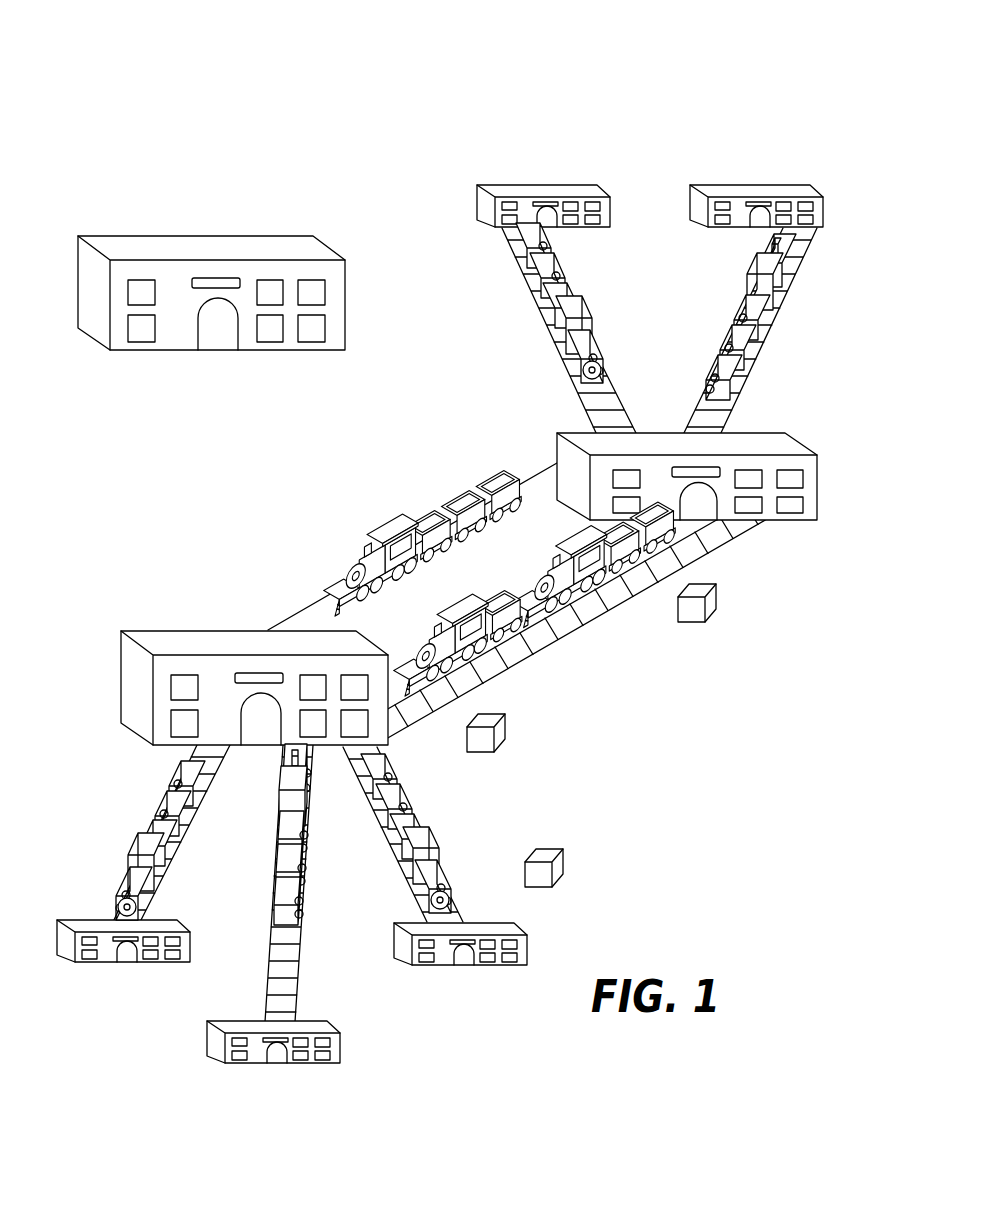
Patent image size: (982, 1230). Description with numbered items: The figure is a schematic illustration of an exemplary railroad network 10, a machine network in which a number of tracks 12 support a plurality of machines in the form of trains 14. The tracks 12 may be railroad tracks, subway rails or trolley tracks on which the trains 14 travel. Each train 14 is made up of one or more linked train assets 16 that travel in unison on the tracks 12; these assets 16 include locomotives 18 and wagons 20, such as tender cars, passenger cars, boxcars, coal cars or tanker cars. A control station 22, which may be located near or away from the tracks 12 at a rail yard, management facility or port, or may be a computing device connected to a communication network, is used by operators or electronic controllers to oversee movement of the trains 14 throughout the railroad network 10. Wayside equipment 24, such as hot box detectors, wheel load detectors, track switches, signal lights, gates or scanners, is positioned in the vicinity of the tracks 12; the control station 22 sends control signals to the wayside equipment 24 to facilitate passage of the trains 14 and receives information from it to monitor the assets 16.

The railroad network 10 is at (731, 67).
The tracks 12 is at (523, 652).
The trains 14 is at (703, 319).
The train assets 16 is at (422, 494).
The locomotives 18 is at (382, 523).
The wagons 20 is at (428, 517).
The control station 22 is at (208, 236).
The wayside equipment 24 is at (717, 595).